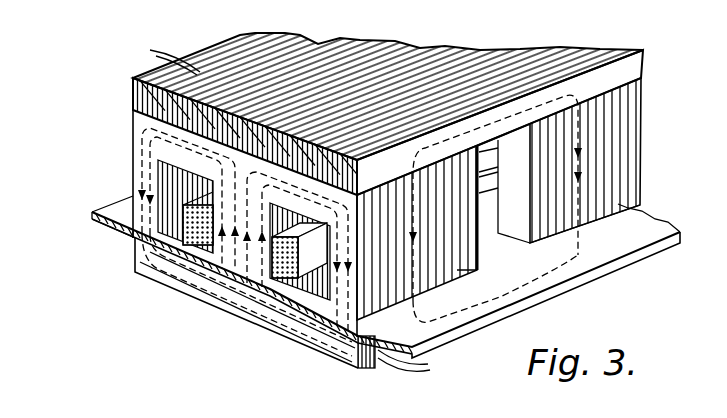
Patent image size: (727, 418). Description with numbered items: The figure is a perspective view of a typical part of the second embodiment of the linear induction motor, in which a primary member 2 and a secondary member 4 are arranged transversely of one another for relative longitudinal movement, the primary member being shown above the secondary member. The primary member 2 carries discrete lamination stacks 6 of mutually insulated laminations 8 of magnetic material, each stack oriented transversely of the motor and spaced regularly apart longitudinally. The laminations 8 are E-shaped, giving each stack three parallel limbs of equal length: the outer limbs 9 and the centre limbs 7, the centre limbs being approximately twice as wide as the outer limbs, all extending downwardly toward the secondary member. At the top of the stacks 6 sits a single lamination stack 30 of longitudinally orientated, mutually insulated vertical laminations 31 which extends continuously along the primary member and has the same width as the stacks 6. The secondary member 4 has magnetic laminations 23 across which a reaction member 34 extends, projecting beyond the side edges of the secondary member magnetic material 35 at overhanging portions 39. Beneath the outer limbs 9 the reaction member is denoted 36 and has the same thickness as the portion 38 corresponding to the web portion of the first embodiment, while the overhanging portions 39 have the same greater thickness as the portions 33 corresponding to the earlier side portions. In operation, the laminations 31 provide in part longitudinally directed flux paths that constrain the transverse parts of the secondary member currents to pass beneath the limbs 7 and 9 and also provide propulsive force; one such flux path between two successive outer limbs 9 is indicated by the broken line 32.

The primary member 2 is at (127, 103).
The secondary member 4 is at (353, 355).
The lamination stacks 6 is at (470, 268).
The centre limbs 7 is at (236, 315).
The laminations 8 is at (456, 270).
The outer limbs 9 is at (136, 155).
The magnetic laminations 23 is at (417, 366).
The lamination stack 30 is at (613, 50).
The vertical laminations 31 is at (160, 59).
The broken line 32 is at (509, 313).
The portions 33 is at (172, 268).
The reaction member 34 is at (110, 242).
The secondary member magnetic material 35 is at (150, 300).
The reaction member portion beneath outer limbs 36 is at (142, 272).
The portion 38 is at (250, 272).
The overhanging portions 39 is at (92, 215).